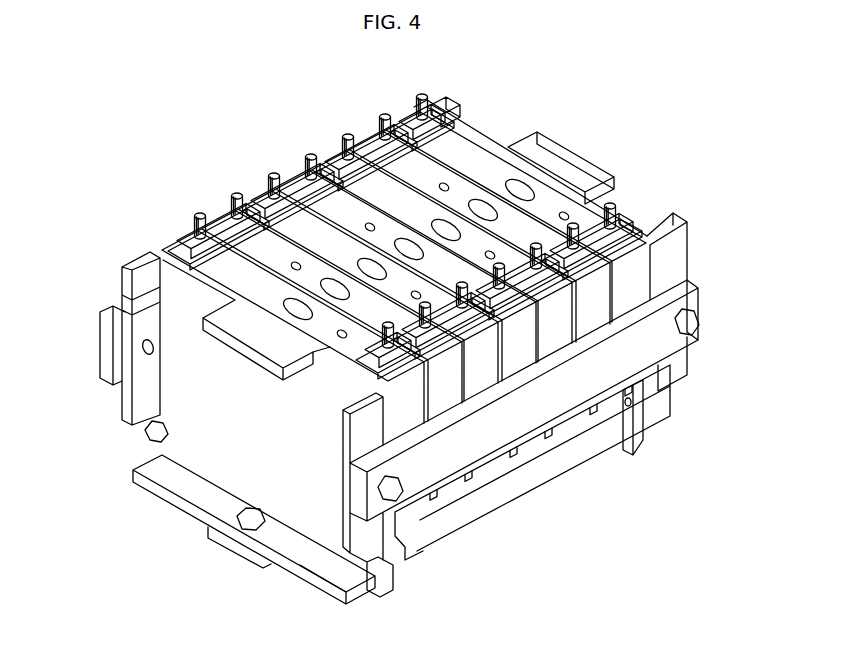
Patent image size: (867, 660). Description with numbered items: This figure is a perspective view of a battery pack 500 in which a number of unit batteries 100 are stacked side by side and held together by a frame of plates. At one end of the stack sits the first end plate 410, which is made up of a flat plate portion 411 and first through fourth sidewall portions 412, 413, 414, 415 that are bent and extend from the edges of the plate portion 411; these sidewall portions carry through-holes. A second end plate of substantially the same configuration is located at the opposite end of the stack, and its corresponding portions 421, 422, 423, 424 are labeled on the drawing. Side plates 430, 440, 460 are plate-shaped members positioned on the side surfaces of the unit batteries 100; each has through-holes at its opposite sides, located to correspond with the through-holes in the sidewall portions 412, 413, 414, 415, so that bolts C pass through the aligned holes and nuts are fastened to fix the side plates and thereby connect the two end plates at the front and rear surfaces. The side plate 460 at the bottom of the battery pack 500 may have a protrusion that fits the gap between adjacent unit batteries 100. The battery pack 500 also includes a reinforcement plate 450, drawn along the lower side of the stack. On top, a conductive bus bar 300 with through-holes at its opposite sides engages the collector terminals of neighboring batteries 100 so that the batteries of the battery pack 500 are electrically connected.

The battery pack 500 is at (131, 144).
The battery 100 is at (396, 114).
The conductive bus bar 300 is at (363, 137).
The first end plate 410 is at (127, 449).
The plate portion 411 is at (195, 453).
The first sidewall portion 412 is at (218, 312).
The second sidewall portion 413 is at (140, 382).
The third sidewall portion 414 is at (370, 540).
The fourth sidewall portion 415 is at (328, 574).
The second end plate 421 is at (642, 214).
The end plate flange 422 is at (565, 157).
The end plate tab 423 is at (447, 98).
The end plate bracket block 424 is at (677, 242).
The side plate 430 is at (104, 344).
The side plate 440 is at (472, 448).
The reinforcement plate 450 is at (590, 455).
The side plate 460 is at (232, 543).
The bolt C is at (700, 322).